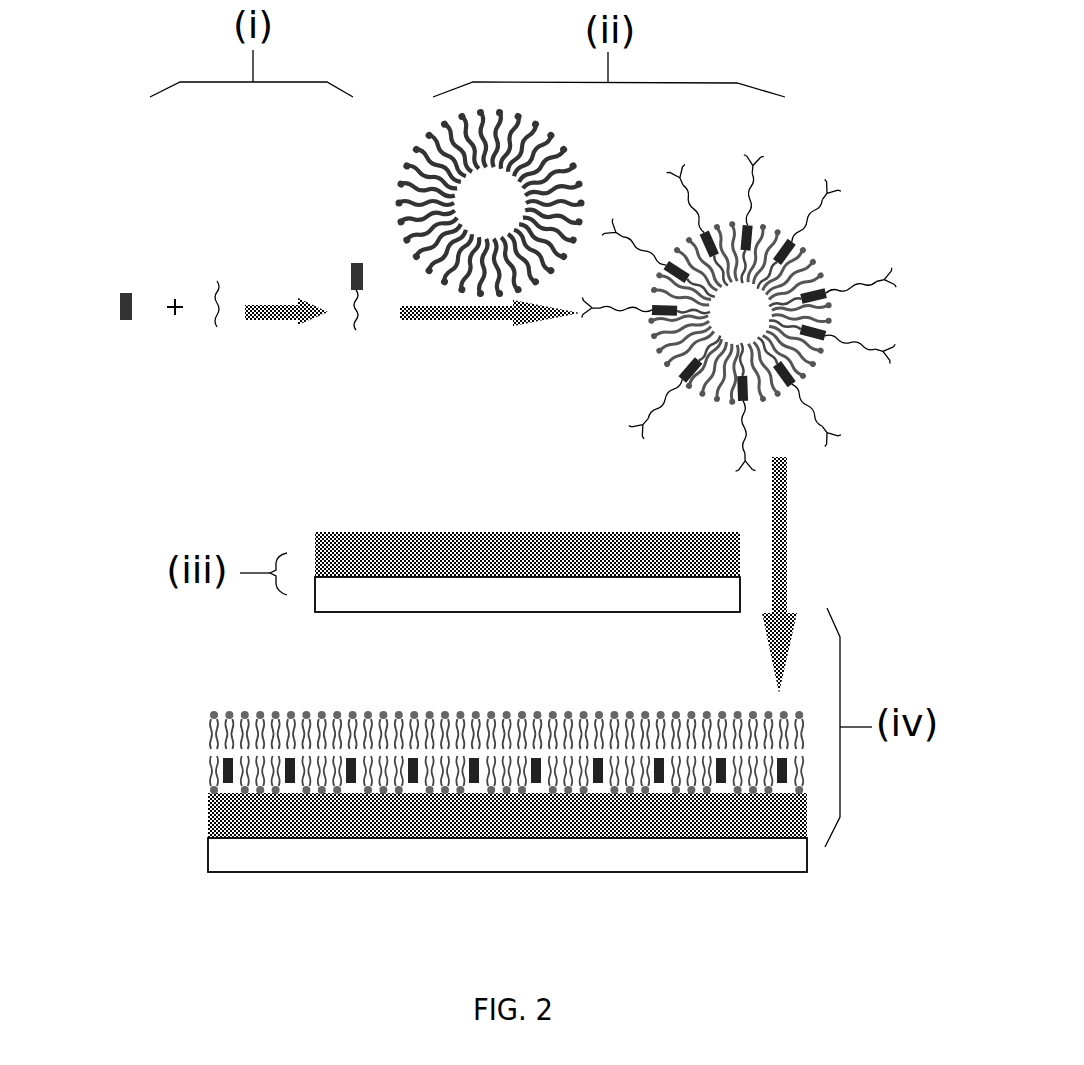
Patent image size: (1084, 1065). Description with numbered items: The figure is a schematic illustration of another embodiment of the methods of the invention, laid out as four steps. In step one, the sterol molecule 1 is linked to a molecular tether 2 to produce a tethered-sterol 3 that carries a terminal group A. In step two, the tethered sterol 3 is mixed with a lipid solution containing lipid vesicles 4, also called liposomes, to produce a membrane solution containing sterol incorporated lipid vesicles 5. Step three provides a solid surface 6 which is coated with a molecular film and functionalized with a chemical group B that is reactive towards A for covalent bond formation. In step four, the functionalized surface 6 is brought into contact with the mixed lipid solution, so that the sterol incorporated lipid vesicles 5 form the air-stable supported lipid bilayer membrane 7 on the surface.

The sterol molecule 1 is at (115, 265).
The molecular tether 2 is at (213, 240).
The tethered-sterol 3 is at (345, 250).
The lipid vesicles 4 is at (590, 158).
The sterol incorporated lipid vesicles 5 is at (790, 163).
The solid surface 6 is at (433, 508).
The air-stable supported lipid bilayer membrane 7 is at (195, 710).